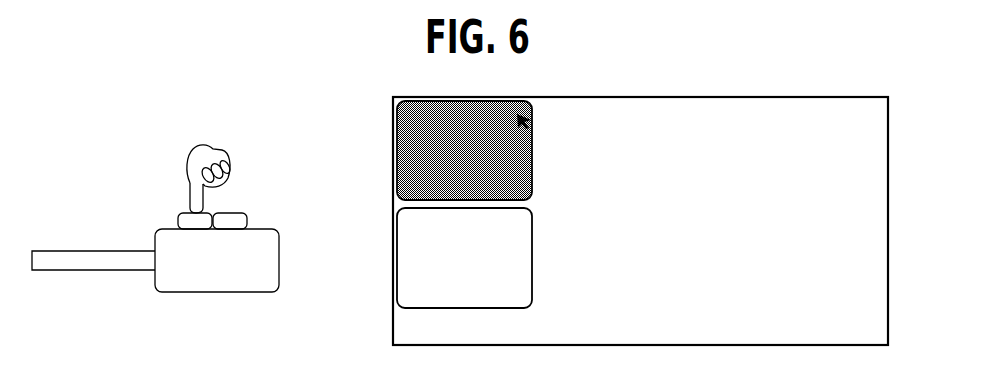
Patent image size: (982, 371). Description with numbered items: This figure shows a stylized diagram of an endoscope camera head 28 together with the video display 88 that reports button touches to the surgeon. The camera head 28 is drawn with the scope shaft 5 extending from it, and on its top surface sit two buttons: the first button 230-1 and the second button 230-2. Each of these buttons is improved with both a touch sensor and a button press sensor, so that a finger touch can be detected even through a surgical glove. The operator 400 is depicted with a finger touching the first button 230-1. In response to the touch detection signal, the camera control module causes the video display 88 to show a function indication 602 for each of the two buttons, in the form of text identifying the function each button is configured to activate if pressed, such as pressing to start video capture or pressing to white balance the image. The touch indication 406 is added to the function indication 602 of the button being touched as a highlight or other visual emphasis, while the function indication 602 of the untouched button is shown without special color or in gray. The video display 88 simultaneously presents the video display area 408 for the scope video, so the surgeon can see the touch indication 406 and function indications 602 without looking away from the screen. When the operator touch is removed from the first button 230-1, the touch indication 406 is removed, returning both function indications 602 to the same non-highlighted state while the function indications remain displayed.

The operator 400 is at (221, 152).
The first button 230-1 is at (178, 220).
The second button 230-2 is at (247, 220).
The scope shaft 5 is at (72, 251).
The camera head 28 is at (276, 262).
The video display 88 is at (393, 155).
The touch indication 406 is at (530, 125).
The function indication 602 is at (532, 150).
The video display area 408 is at (770, 209).